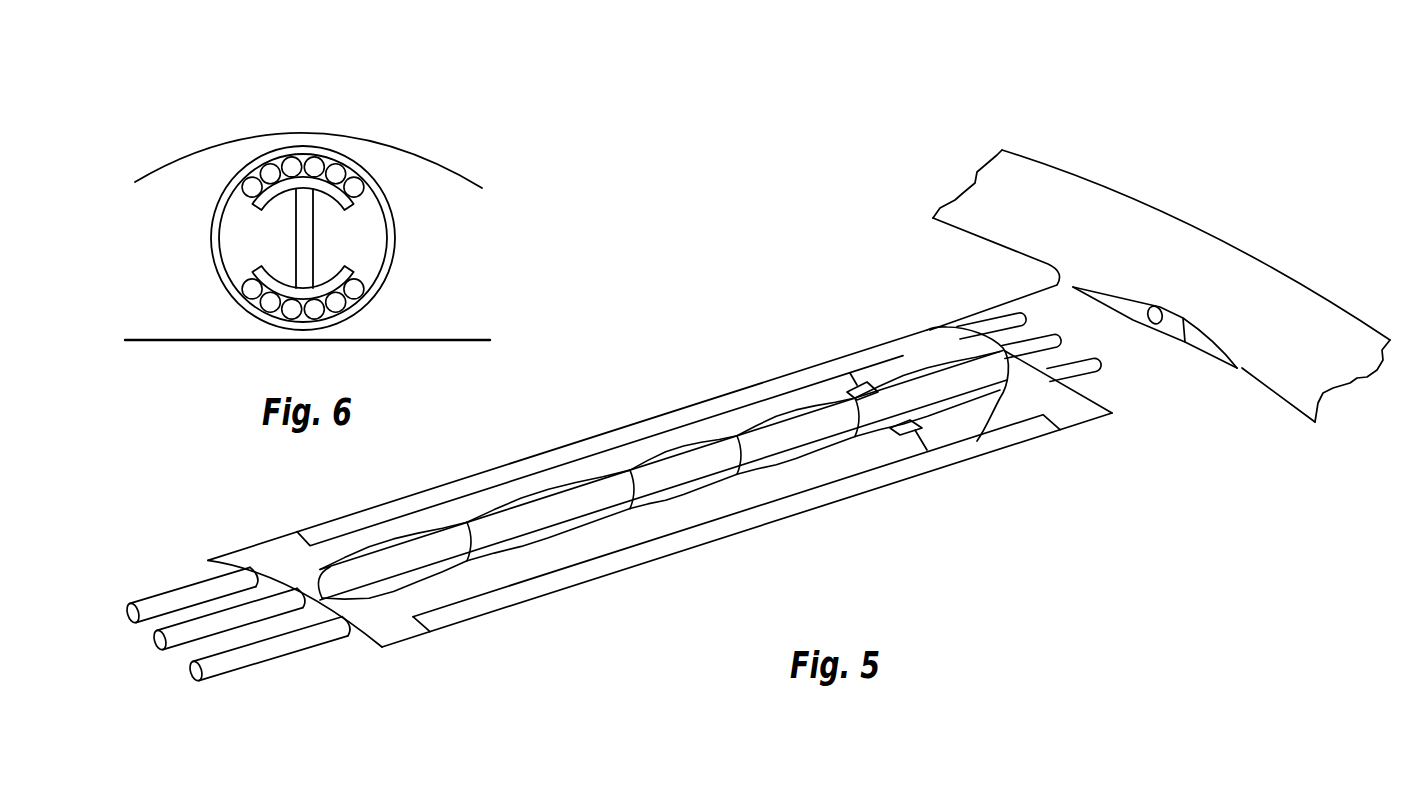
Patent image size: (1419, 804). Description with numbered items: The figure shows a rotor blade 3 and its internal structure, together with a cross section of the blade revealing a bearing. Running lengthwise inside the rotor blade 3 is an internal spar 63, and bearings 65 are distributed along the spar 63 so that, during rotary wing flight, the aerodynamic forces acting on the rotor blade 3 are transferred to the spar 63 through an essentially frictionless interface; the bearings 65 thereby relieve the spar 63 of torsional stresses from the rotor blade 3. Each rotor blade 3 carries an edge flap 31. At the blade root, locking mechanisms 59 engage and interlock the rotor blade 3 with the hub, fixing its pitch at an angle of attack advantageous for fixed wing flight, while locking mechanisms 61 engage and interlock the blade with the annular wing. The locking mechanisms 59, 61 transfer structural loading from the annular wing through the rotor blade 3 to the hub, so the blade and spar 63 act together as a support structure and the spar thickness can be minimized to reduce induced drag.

In FIG. 6, the rotor blade 3 is at (482, 188).
In FIG. 5, the edge flap 31 is at (658, 417).
In FIG. 5, the locking mechanism 59 is at (607, 533).
In FIG. 5, the locking mechanism 61 is at (1160, 286).
In FIG. 6, the internal spar 63 is at (320, 249).
In FIG. 5, the internal spar 63 is at (180, 655).
In FIG. 6, the bearing 65 is at (379, 163).
In FIG. 5, the bearing 65 is at (467, 564).